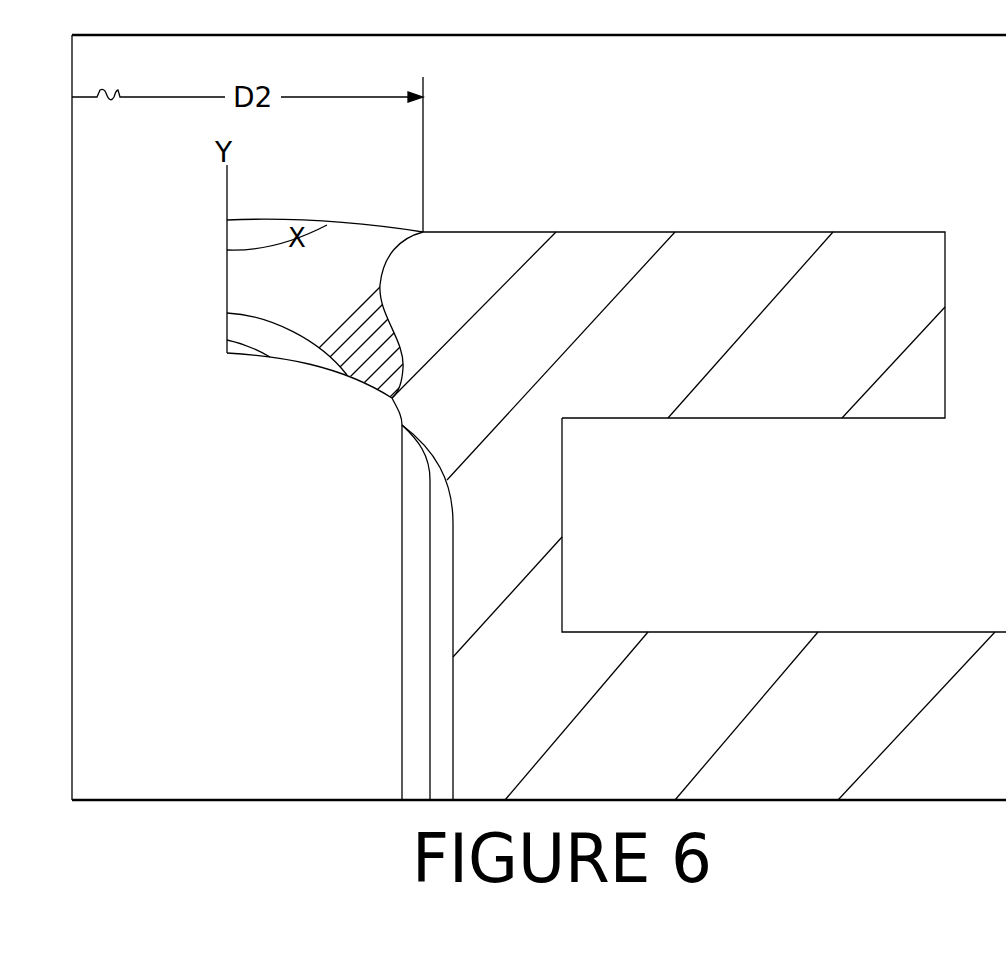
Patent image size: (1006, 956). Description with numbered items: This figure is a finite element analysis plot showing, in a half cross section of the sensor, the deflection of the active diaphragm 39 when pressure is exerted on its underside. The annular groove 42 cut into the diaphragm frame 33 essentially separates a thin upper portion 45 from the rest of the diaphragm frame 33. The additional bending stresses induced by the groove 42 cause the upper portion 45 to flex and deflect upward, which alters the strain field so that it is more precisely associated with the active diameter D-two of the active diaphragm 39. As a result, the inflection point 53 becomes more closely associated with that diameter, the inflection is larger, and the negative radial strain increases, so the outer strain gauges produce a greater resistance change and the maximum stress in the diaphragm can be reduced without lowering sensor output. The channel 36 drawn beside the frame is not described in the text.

The diaphragm frame 33 is at (758, 632).
The channel 36 is at (397, 578).
The active diaphragm 39 is at (255, 365).
The annular groove 42 is at (692, 515).
The upper portion 45 is at (860, 232).
The inflection point 53 is at (432, 224).